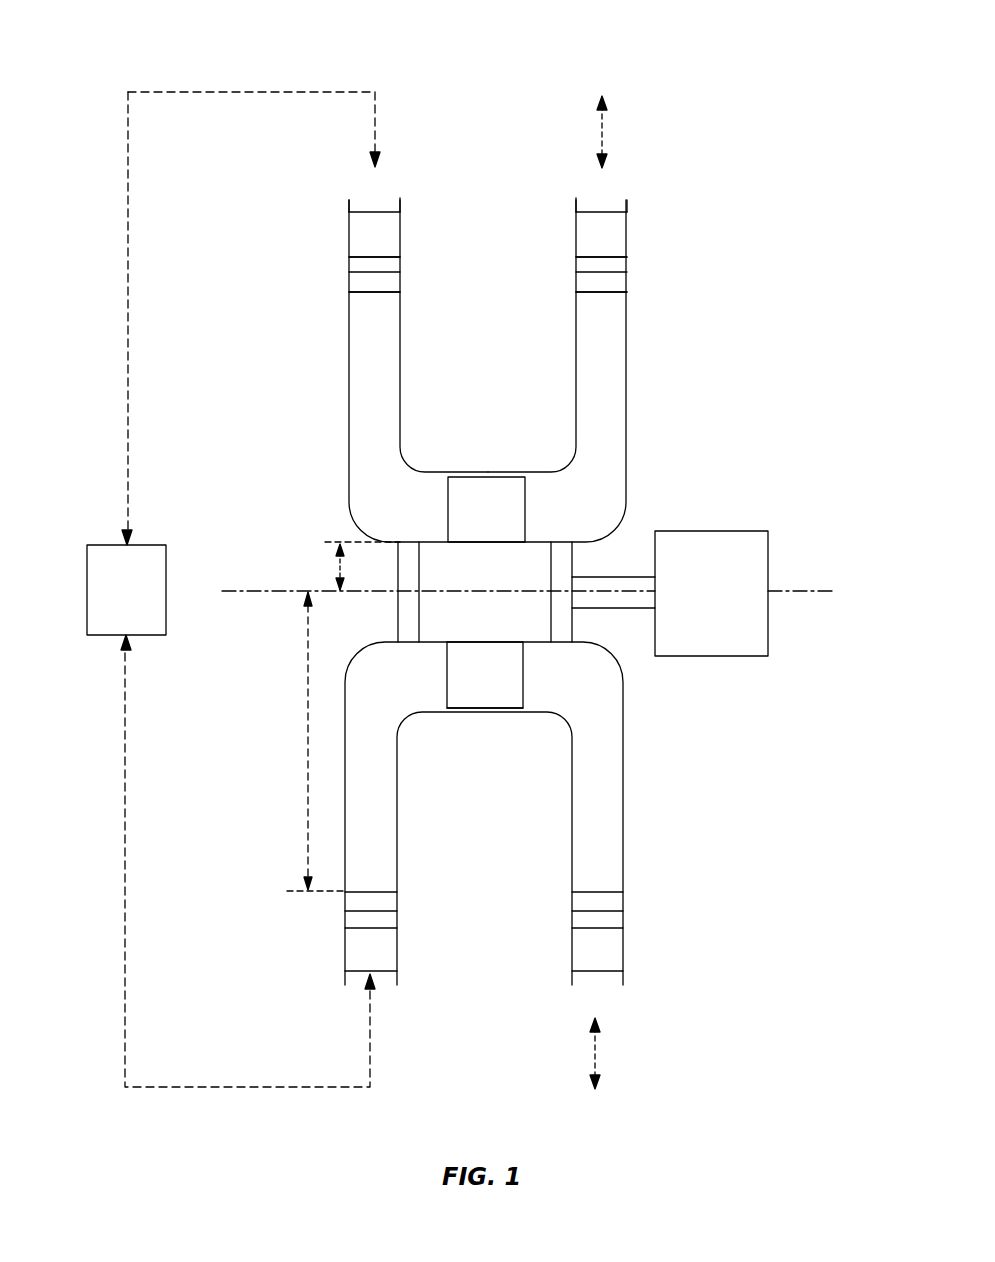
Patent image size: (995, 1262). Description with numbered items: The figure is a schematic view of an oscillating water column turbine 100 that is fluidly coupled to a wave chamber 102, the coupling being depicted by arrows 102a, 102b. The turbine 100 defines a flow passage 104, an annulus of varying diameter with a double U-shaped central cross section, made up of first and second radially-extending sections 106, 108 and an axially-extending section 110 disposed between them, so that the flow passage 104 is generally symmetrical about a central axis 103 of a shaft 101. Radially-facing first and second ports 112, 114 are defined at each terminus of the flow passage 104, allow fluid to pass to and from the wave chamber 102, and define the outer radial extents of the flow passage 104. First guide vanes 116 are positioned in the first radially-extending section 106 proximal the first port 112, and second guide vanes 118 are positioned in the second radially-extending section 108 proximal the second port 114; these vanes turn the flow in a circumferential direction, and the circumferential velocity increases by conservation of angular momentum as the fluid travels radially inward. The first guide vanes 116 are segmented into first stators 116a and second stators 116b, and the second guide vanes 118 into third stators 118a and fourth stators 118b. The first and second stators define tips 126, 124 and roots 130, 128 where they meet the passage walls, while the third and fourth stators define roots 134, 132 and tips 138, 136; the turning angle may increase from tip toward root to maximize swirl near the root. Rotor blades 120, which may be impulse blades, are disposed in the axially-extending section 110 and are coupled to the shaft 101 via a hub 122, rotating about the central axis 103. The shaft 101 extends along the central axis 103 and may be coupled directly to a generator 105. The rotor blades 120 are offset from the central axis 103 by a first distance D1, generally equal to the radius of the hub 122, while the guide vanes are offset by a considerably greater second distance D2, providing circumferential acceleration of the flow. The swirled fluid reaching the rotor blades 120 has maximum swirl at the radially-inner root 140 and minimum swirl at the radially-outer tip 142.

The oscillating water column turbine 100 is at (160, 45).
The shaft 101 is at (612, 610).
The wave chamber 102 is at (148, 606).
The arrow 102a is at (128, 236).
The arrow 102b is at (122, 860).
The central axis 103 is at (800, 592).
The flow passage 104 is at (360, 434).
The generator 105 is at (735, 606).
The first radially-extending section 106 is at (388, 343).
The second radially-extending section 108 is at (585, 372).
The axially-extending section 110 is at (416, 484).
The first port 112 is at (400, 198).
The second port 114 is at (627, 198).
The first guide vanes 116 is at (349, 233).
The first stators 116a is at (400, 233).
The second stators 116b is at (400, 285).
The second guide vanes 118 is at (627, 233).
The third stators 118a is at (576, 228).
The fourth stators 118b is at (576, 285).
The rotor blades 120 is at (517, 688).
The hub 122 is at (512, 626).
The tip 124 is at (397, 902).
The tip 126 is at (397, 955).
The root 128 is at (345, 902).
The root 130 is at (345, 950).
The root 132 is at (623, 902).
The root 134 is at (623, 955).
The tip 136 is at (572, 902).
The tip 138 is at (572, 950).
The root 140 is at (455, 640).
The tip 142 is at (458, 709).
The first distance D1 is at (338, 566).
The second distance D2 is at (307, 746).